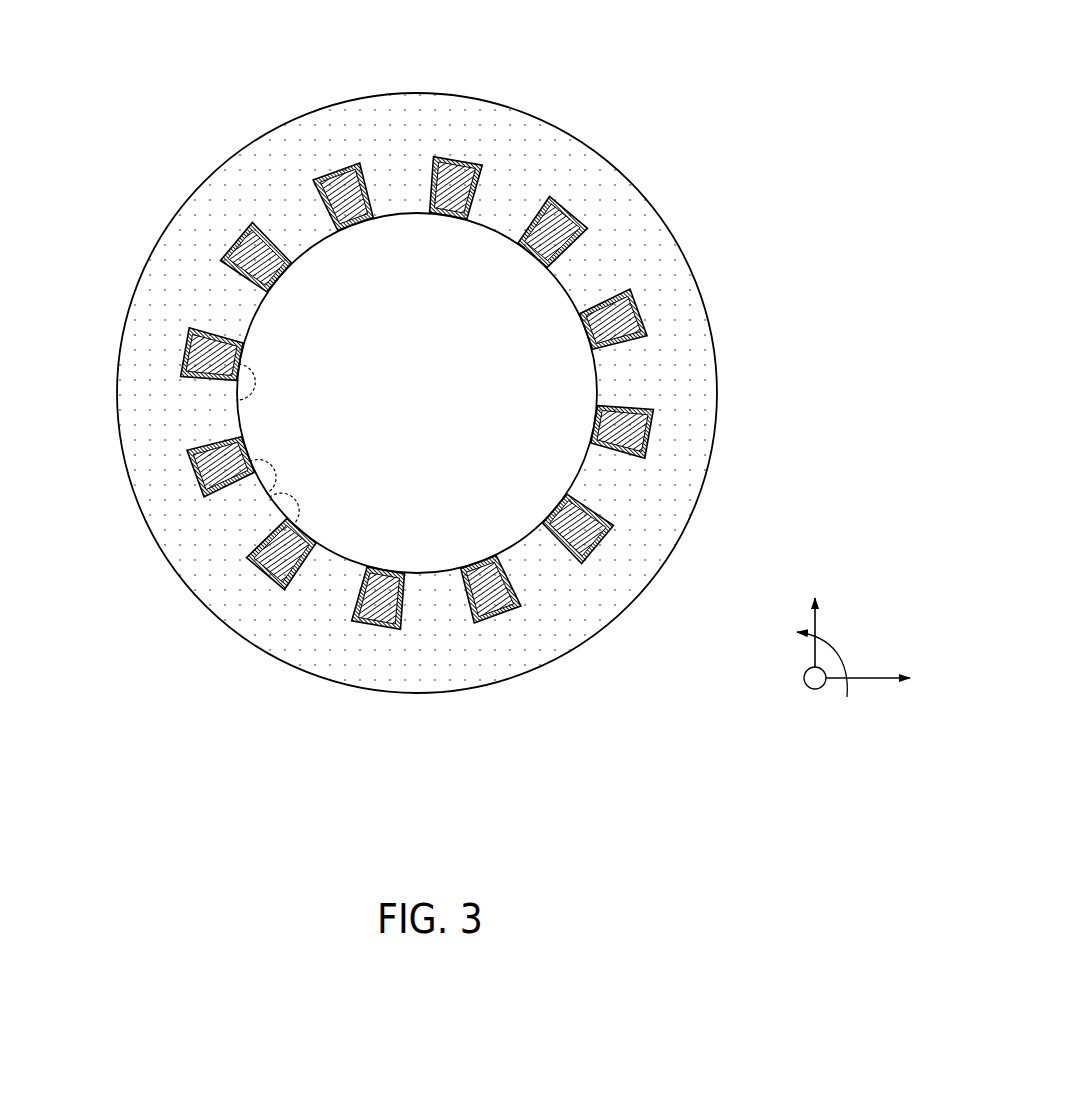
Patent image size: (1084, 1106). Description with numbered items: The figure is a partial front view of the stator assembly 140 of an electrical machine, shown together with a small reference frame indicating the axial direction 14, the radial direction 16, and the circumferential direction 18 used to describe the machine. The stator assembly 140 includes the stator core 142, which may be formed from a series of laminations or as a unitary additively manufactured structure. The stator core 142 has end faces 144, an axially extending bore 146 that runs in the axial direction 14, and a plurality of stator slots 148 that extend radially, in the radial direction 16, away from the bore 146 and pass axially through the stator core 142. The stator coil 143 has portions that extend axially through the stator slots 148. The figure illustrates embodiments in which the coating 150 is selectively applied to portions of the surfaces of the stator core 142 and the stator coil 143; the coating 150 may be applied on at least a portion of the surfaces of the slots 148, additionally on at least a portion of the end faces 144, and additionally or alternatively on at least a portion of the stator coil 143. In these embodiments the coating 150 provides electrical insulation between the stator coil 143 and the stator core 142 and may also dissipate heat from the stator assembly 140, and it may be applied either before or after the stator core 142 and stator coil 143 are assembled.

The stator assembly 140 is at (434, 365).
The stator core 142 is at (523, 112).
The end faces 144 is at (383, 127).
The bore 146 is at (510, 384).
The stator slots 148 is at (517, 603).
The coating 150 is at (643, 307).
The stator coil 143 is at (237, 403).
The axial direction 14 is at (815, 690).
The radial direction 16 is at (820, 602).
The circumferential direction 18 is at (835, 648).